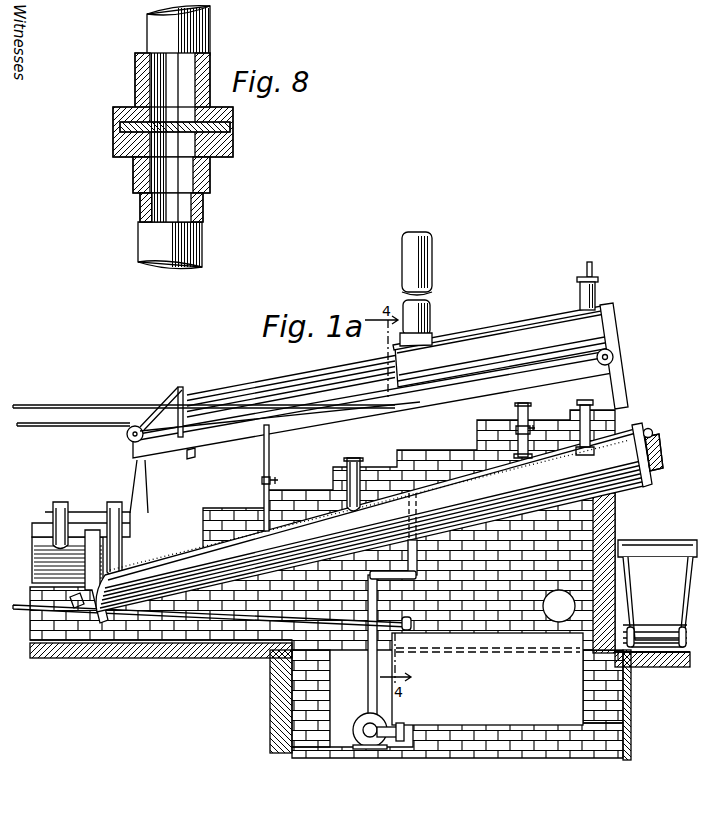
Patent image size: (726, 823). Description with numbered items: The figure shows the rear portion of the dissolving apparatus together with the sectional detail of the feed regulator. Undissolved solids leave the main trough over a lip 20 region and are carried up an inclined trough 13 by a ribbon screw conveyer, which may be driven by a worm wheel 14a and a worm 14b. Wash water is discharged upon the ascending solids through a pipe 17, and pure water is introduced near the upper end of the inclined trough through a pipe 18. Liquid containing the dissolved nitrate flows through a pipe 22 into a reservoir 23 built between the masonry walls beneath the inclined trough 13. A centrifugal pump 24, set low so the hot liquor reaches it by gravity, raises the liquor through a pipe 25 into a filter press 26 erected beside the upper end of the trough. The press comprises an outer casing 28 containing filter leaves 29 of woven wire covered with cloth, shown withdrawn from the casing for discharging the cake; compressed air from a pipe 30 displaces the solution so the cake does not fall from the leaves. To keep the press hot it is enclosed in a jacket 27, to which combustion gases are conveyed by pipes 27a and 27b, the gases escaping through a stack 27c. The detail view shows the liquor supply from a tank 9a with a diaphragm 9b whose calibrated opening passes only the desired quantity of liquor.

In FIG. 8, the tank 9a is at (212, 43).
In FIG. 8, the diaphragm 9b is at (233, 130).
In FIG. 1A, the inclined trough 13 is at (372, 520).
In FIG. 1A, the worm wheel 14a is at (661, 458).
In FIG. 1A, the worm 14b is at (661, 417).
In FIG. 1A, the pipe 17 is at (270, 463).
In FIG. 1A, the pipe 18 is at (517, 452).
In FIG. 1A, the lip 20 is at (467, 723).
In FIG. 1A, the pipe 22 is at (232, 613).
In FIG. 1A, the reservoir 23 is at (560, 705).
In FIG. 1A, the pump 24 is at (354, 721).
In FIG. 1A, the pipe 25 is at (415, 553).
In FIG. 1A, the filter press 26 is at (520, 345).
In FIG. 1A, the jacket 27 is at (477, 331).
In FIG. 1A, the pipe 27a is at (560, 618).
In FIG. 1A, the pipe 27b is at (568, 523).
In FIG. 1A, the stack 27c is at (432, 280).
In FIG. 1A, the outer casing 28 is at (600, 333).
In FIG. 1A, the filter leaves 29 is at (267, 400).
In FIG. 1A, the pipe 30 is at (593, 265).